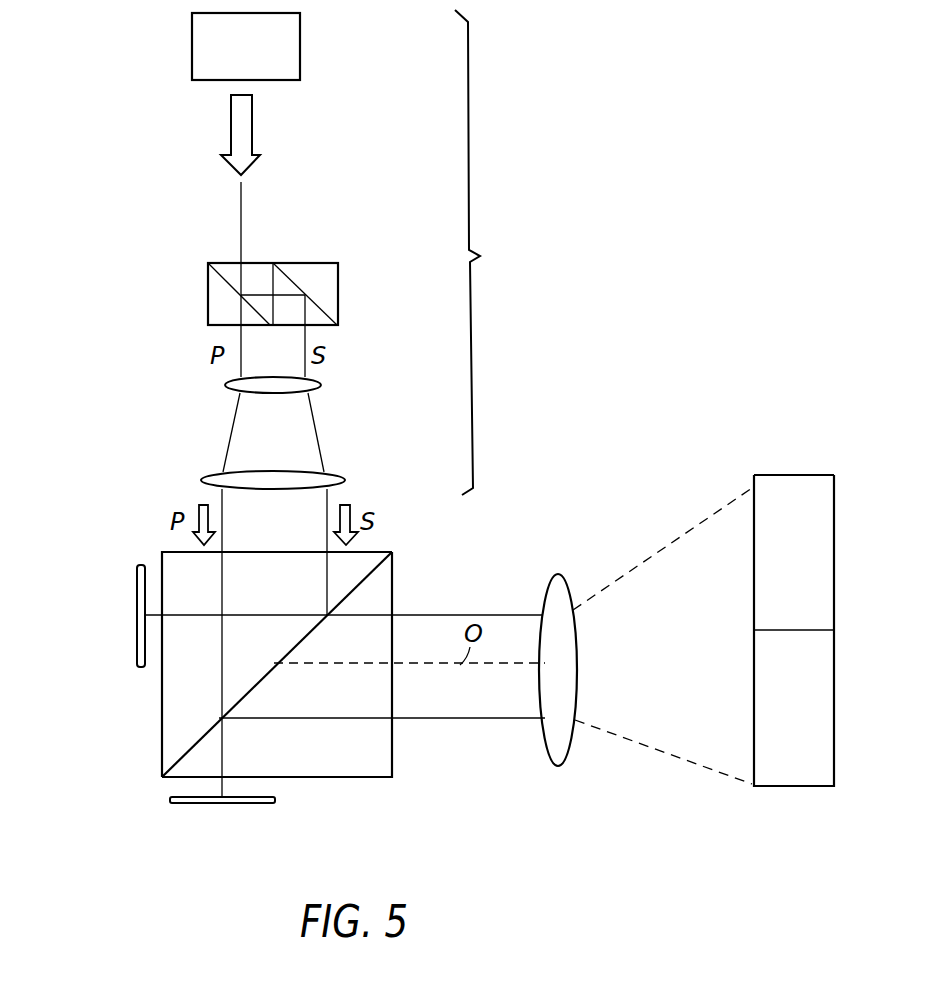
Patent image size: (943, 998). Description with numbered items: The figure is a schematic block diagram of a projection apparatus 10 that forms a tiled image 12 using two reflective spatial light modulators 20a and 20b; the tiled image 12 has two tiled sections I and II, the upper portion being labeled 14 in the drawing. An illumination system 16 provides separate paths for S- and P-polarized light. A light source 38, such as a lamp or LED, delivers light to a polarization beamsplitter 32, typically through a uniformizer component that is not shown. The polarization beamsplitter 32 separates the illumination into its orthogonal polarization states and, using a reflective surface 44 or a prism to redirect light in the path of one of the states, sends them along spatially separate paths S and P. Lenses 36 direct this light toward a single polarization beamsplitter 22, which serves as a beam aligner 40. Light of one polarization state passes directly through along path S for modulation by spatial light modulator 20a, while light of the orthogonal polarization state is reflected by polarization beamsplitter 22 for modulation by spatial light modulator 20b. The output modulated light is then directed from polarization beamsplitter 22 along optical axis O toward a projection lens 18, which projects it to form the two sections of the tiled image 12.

The projection display system 10 is at (123, 96).
The tiled image 12 is at (773, 787).
The screen region 14 is at (790, 475).
The illumination system 16 is at (487, 252).
The projection lens 18 is at (567, 758).
The spatial light modulator 20a is at (360, 778).
The spatial light modulator 20b is at (162, 722).
The polarization beamsplitter 22 is at (395, 583).
The polarization beamsplitter 32 is at (208, 287).
The lenses 36 is at (205, 478).
The light source 38 is at (300, 42).
The beam aligner 40 is at (160, 570).
The reflective surface 44 is at (290, 276).